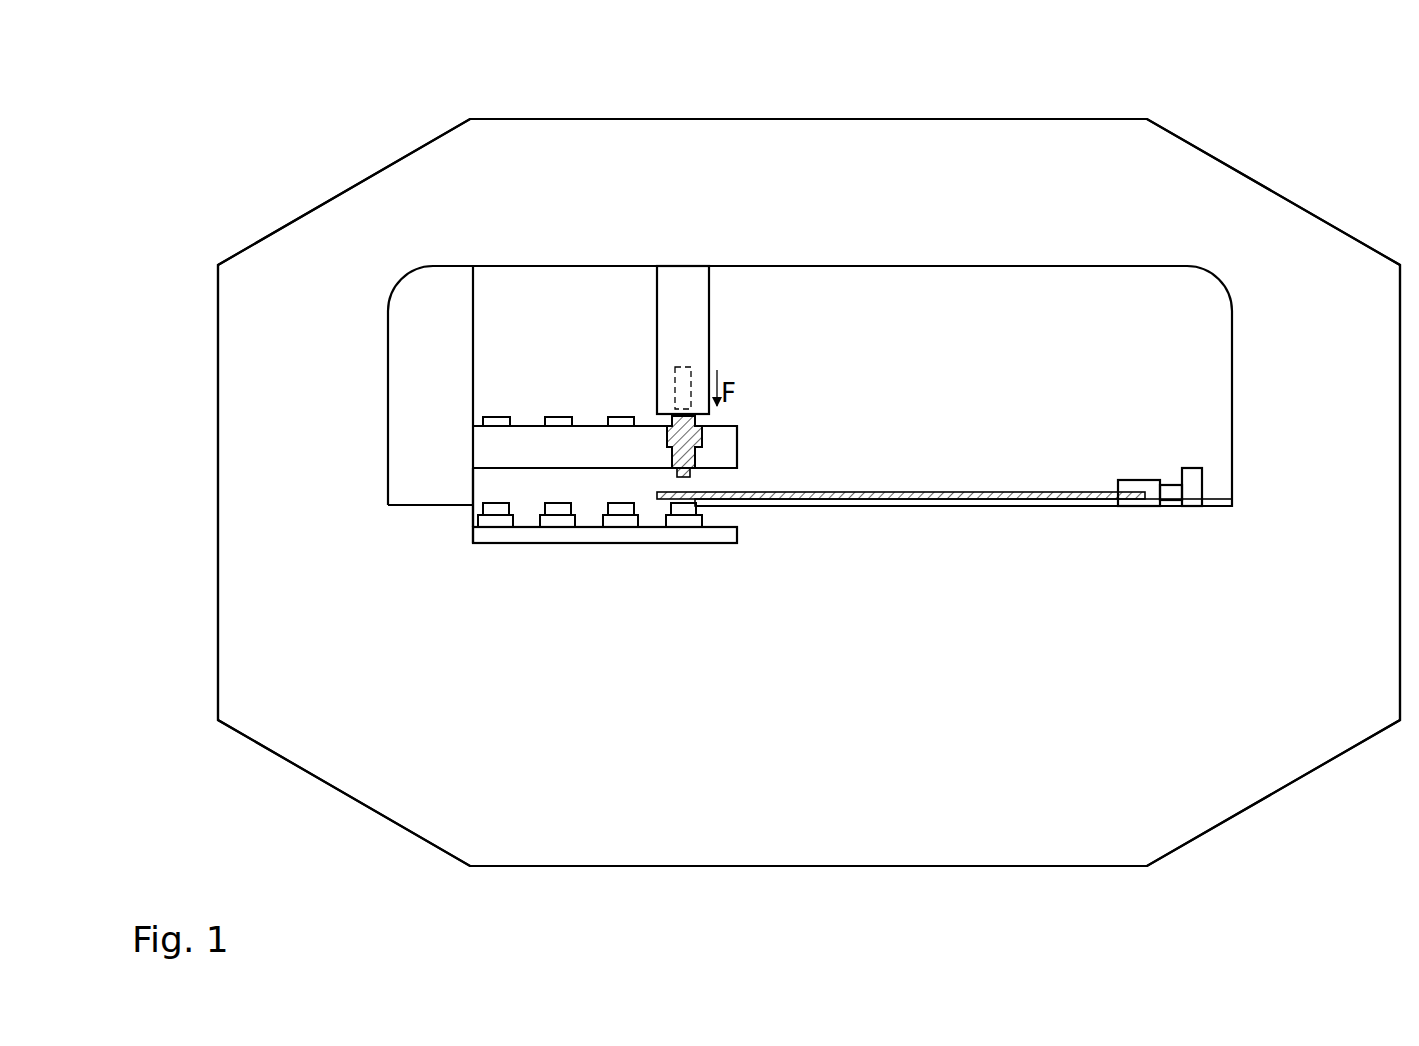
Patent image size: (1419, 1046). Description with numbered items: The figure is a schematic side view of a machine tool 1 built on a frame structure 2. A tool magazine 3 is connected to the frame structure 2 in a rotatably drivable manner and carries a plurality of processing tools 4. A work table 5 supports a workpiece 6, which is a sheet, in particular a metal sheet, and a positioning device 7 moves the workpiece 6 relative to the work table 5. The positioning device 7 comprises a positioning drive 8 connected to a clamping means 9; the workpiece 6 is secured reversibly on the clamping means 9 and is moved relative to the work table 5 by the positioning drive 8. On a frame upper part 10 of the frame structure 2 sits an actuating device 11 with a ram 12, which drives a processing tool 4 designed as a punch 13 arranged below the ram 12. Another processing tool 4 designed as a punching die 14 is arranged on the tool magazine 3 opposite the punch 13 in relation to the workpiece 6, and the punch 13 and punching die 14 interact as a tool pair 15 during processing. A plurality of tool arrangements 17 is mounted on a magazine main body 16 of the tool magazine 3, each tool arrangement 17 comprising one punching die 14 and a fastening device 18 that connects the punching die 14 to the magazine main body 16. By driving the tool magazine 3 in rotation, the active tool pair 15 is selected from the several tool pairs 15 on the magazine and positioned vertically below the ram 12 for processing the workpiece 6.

The machine tool 1 is at (206, 114).
The frame structure 2 is at (256, 236).
The tool magazine 3 is at (740, 438).
The processing tool 4 is at (683, 502).
The work table 5 is at (902, 505).
The workpiece 6 is at (855, 492).
The positioning device 7 is at (1167, 476).
The positioning drive 8 is at (1192, 468).
The clamping means 9 is at (1130, 483).
The frame upper part 10 is at (975, 135).
The actuating device 11 is at (674, 294).
The ram 12 is at (690, 382).
The punch 13 is at (702, 427).
The punching die 14 is at (470, 518).
The tool pair 15 is at (709, 518).
The magazine main body 16 is at (473, 534).
The tool arrangement 17 is at (471, 500).
The fastening device 18 is at (680, 543).